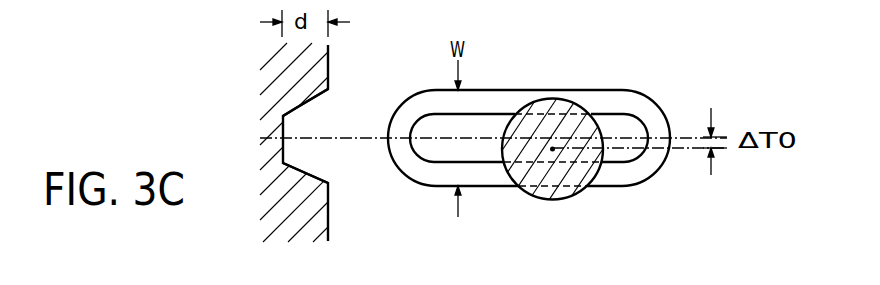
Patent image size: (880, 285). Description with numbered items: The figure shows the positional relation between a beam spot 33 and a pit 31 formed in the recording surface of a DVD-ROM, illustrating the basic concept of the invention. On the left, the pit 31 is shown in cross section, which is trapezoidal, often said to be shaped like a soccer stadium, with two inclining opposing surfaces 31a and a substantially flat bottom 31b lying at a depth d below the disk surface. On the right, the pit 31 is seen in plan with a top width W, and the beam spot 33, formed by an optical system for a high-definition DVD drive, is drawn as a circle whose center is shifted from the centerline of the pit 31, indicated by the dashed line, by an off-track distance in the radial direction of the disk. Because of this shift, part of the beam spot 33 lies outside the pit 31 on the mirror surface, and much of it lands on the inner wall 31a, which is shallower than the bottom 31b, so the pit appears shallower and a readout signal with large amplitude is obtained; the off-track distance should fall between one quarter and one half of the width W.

The pit 31 is at (320, 128).
The inclining opposing surface 31a is at (323, 172).
The substantially flat bottom 31b is at (296, 108).
The beam spot 33 is at (553, 98).